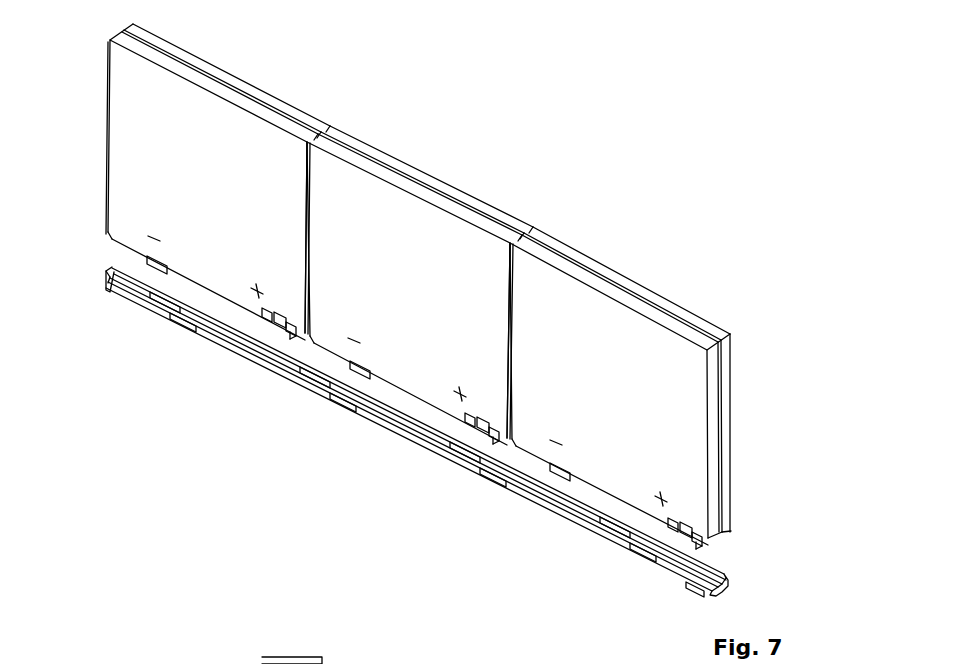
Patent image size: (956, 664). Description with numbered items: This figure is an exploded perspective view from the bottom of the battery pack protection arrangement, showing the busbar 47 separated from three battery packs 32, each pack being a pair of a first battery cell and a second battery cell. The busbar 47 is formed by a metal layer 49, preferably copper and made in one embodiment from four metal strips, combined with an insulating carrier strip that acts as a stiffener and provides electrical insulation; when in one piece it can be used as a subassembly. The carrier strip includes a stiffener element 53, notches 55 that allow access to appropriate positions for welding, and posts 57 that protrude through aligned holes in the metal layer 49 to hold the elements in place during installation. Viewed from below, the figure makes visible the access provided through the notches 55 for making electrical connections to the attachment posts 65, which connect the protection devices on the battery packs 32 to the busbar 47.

The pair 32 is at (228, 70).
The busbar 47 is at (419, 465).
The metal layer 49 is at (490, 480).
The stiffener element 53 is at (717, 568).
The notches 55 is at (688, 588).
The posts 57 is at (292, 657).
The attachment element 65 is at (497, 443).